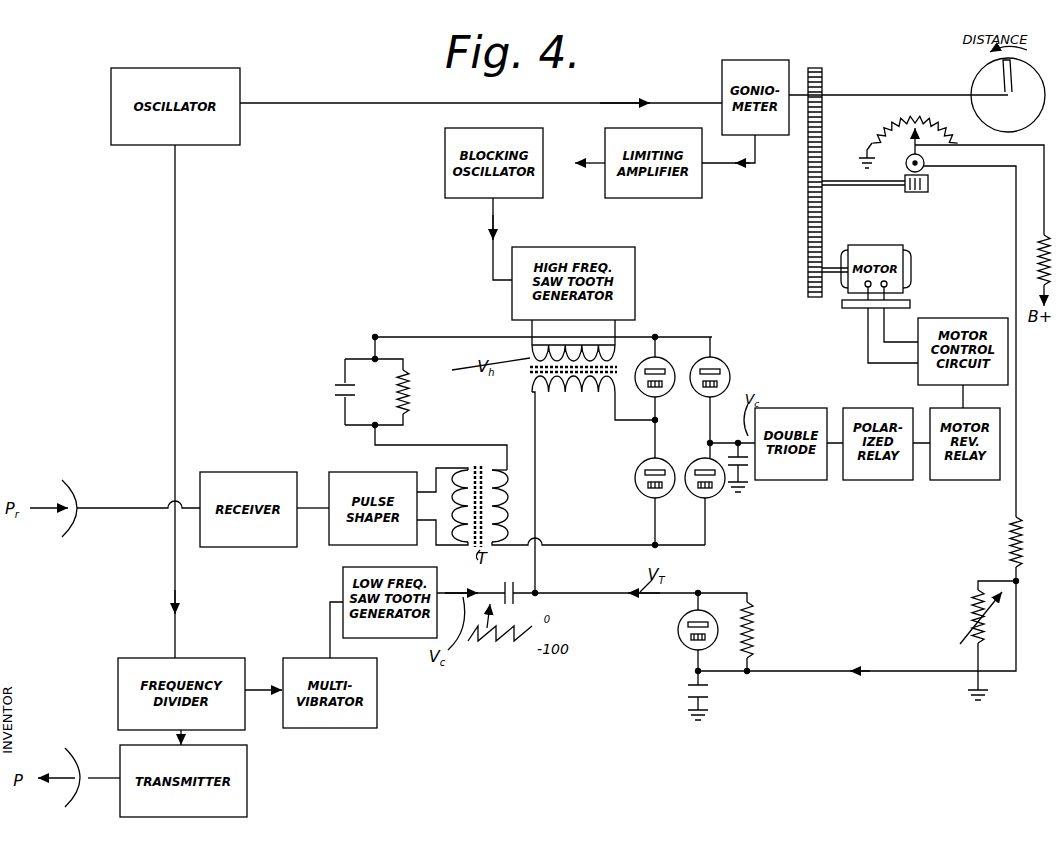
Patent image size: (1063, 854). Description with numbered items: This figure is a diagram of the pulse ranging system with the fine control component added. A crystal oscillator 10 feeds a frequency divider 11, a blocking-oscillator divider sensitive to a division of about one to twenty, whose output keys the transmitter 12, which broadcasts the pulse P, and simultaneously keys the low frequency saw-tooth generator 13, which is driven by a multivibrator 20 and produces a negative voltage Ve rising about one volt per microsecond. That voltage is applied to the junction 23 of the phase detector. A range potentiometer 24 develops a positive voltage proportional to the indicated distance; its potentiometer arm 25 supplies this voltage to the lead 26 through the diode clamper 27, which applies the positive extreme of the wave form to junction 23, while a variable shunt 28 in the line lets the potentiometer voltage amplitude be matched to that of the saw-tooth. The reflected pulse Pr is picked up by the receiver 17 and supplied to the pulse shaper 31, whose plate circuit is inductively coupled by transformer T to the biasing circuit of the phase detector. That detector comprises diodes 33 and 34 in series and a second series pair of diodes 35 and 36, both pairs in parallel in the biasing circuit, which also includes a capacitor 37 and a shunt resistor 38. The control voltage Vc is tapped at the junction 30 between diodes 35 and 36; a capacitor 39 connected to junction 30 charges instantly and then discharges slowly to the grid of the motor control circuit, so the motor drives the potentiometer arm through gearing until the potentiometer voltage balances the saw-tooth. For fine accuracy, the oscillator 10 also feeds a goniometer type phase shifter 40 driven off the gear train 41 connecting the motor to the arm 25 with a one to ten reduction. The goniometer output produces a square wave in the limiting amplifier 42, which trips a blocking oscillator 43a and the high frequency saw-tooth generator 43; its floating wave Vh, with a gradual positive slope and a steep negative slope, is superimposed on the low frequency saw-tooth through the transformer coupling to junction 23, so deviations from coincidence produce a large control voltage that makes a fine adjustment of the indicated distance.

The crystal oscillator 10 is at (111, 103).
The frequency divider 11 is at (165, 658).
The transmitter 12 is at (247, 778).
The low frequency saw-tooth generator 13 is at (343, 584).
The receiver 17 is at (255, 472).
The multivibrator 20 is at (313, 658).
The junction 23 is at (652, 423).
The range potentiometer 24 is at (873, 134).
The potentiometer arm 25 is at (920, 150).
The lead 26 is at (1016, 233).
The diode clamper 27 is at (727, 662).
The variable shunt 28 is at (972, 604).
The junction 30 is at (708, 443).
The pulse shaper 31 is at (355, 472).
The diode 33 is at (640, 355).
The diode 34 is at (638, 490).
The diode 35 is at (745, 352).
The diode 36 is at (692, 495).
The capacitor 37 is at (337, 388).
The shunt resistor 38 is at (398, 414).
The capacitor 39 is at (730, 452).
The phase shifter 40 is at (722, 64).
The gear train 41 is at (808, 178).
The limiting amplifier 42 is at (605, 136).
The high frequency saw-tooth generator 43 is at (572, 247).
The blocking oscillator 43a is at (445, 168).